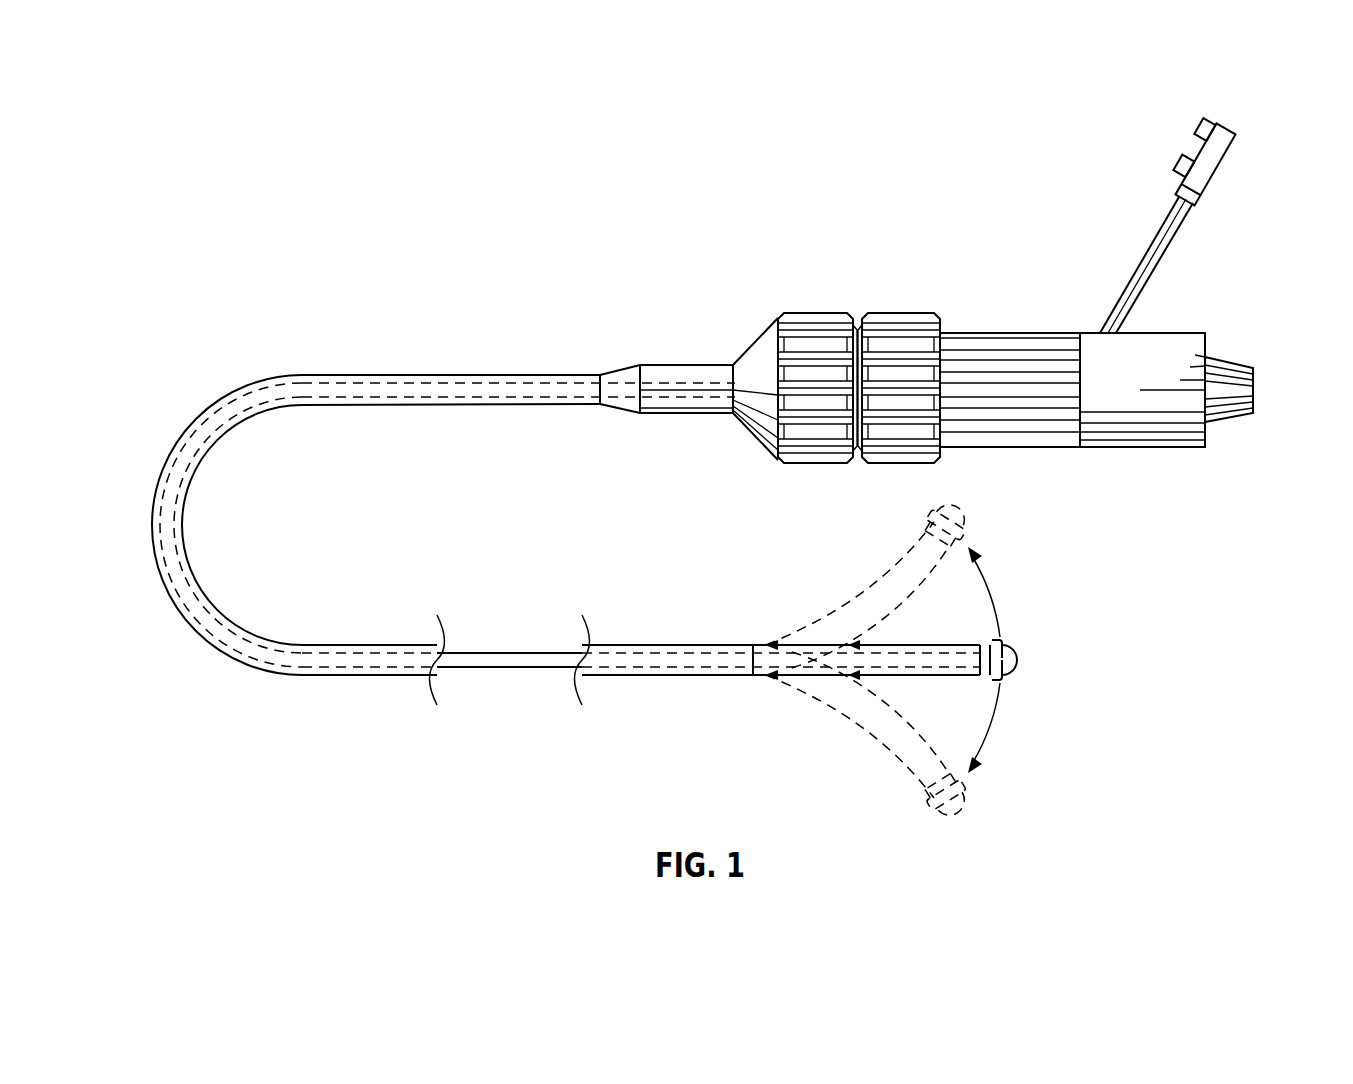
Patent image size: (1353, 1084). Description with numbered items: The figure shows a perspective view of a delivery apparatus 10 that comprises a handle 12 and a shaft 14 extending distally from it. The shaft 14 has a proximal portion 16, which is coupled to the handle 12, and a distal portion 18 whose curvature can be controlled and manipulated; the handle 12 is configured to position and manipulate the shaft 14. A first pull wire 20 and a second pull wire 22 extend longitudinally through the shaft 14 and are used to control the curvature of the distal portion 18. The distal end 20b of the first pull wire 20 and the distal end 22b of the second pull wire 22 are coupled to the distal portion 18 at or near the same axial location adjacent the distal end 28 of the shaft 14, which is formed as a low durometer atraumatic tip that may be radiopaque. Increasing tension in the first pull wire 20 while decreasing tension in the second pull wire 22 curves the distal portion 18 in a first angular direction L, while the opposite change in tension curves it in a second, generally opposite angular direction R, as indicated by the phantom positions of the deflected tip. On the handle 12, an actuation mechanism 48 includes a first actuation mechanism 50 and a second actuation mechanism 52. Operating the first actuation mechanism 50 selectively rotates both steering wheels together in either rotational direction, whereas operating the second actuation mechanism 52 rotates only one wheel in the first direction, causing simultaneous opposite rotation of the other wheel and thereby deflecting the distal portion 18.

The delivery apparatus 10 is at (701, 469).
The handle 12 is at (1005, 345).
The shaft 14 is at (226, 403).
The proximal portion 16 is at (522, 378).
The distal portion 18 is at (934, 642).
The first pull wire 20 is at (506, 652).
The second pull wire 22 is at (505, 676).
The distal end of the first pull wire 20b is at (998, 647).
The distal end of the second pull wire 22b is at (998, 673).
The distal end 28 is at (1010, 661).
The actuation mechanism 48 is at (859, 336).
The first actuation mechanism 50 is at (815, 320).
The second actuation mechanism 52 is at (866, 297).